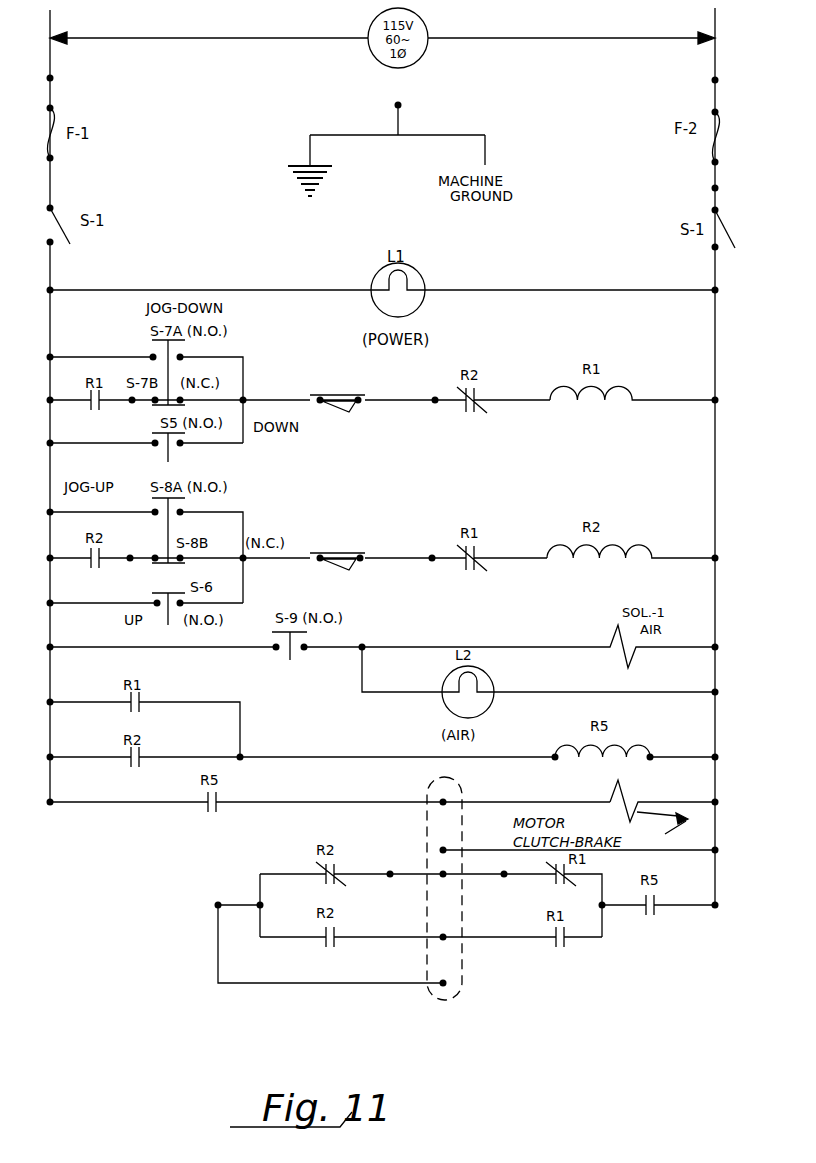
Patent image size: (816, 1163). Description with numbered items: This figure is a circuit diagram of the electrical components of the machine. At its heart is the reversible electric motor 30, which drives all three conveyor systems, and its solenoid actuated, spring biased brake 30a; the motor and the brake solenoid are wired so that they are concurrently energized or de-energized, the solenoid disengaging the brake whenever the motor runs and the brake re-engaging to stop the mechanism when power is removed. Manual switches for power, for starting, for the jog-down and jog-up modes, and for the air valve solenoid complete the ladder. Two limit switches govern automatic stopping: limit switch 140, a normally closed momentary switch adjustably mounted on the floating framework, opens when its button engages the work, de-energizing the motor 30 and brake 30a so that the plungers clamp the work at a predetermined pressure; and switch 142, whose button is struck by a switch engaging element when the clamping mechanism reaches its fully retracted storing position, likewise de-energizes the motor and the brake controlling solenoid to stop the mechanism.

The switch 142 is at (355, 368).
The limit switch 140 is at (352, 530).
The solenoid actuated, spring biased brake 30a is at (612, 789).
The electric motor 30 is at (462, 953).